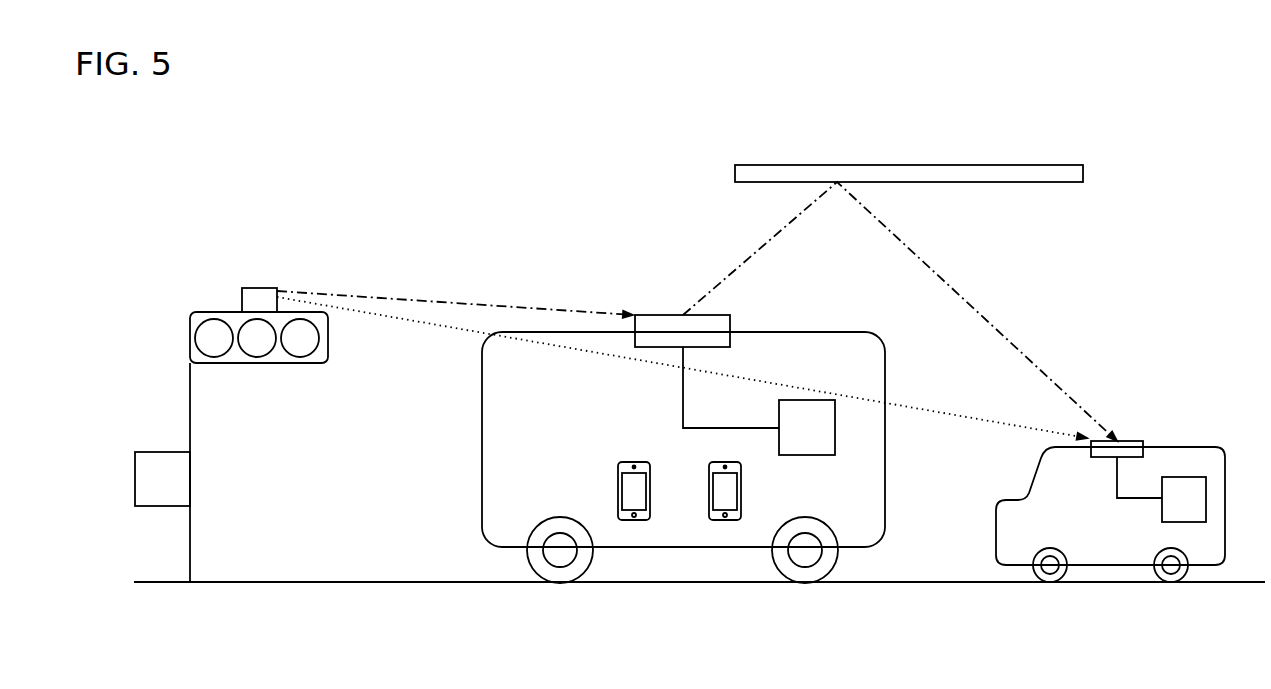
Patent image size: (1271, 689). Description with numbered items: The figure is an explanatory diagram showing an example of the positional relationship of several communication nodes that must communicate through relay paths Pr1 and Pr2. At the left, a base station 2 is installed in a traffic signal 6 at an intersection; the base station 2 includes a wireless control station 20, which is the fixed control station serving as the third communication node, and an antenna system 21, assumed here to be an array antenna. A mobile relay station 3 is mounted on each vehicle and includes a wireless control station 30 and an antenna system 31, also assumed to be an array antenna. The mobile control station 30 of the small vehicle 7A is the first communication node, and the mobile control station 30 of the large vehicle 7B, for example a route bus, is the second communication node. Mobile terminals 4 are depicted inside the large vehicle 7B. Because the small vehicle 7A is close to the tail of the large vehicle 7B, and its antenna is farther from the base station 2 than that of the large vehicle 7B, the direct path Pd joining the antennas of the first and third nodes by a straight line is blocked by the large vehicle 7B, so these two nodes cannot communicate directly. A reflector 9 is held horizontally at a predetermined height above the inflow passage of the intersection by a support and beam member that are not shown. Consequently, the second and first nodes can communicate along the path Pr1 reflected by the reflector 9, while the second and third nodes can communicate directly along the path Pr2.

The base station 2 is at (202, 431).
The wireless control station 20 is at (157, 452).
The antenna system 21 is at (242, 303).
The traffic signal 6 is at (193, 412).
The reflector 9 is at (1033, 165).
The mobile relay station 3 is at (920, 372).
The antenna system 31 is at (730, 327).
The wireless control station 30 is at (803, 400).
The mobile terminal 4 is at (634, 520).
The small vehicle 7A is at (1038, 477).
The large vehicle 7B is at (482, 475).
The relay path Pr1 is at (745, 258).
The relay path Pr2 is at (443, 300).
The direct path Pd is at (407, 317).